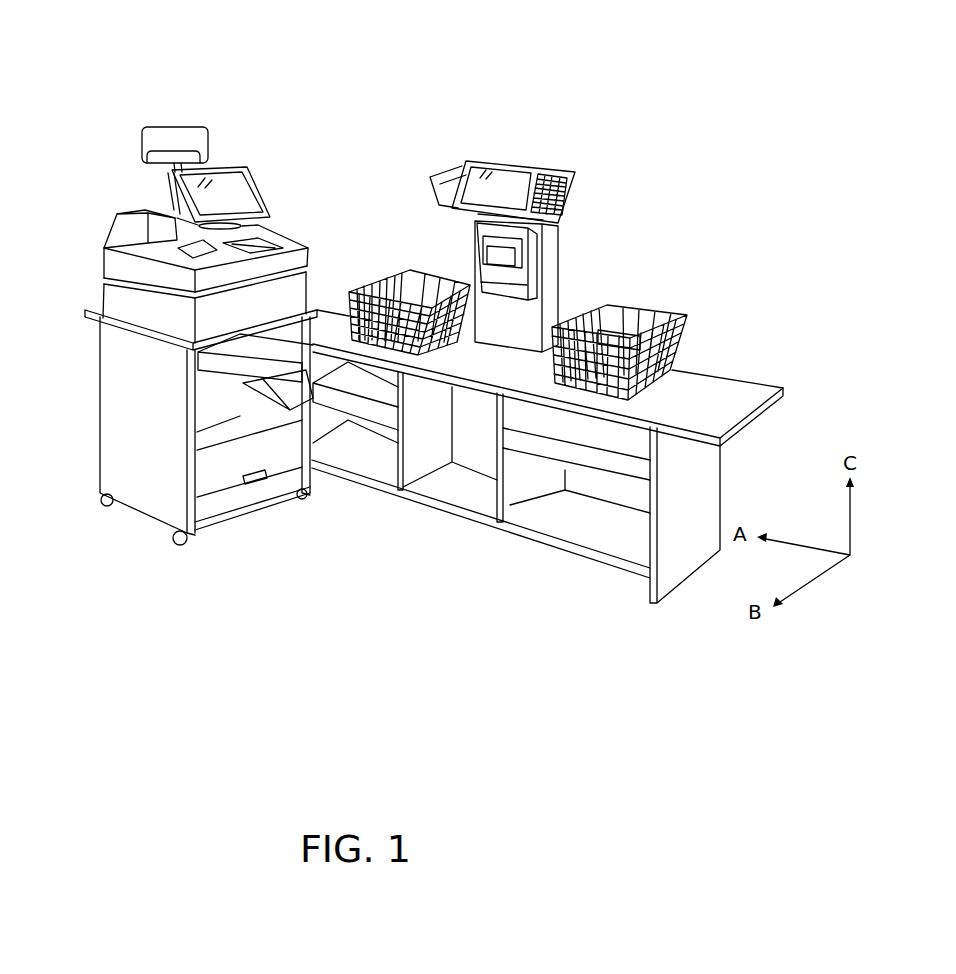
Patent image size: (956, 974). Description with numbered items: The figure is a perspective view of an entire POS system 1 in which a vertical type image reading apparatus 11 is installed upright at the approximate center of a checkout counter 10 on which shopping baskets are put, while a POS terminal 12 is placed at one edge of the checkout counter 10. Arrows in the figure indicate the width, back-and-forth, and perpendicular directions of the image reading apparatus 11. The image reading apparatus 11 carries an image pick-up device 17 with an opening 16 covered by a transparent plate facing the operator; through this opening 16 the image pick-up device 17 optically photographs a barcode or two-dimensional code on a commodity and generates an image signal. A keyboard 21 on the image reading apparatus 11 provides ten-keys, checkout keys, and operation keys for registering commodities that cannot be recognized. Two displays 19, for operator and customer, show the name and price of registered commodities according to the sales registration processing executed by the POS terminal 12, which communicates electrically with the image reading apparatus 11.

The POS system 1 is at (73, 76).
The checkout counter 10 is at (748, 397).
The image reading apparatus 11 is at (551, 250).
The POS terminal 12 is at (118, 258).
The opening 16 is at (477, 243).
The image pick-up device 17 is at (517, 266).
The displays 19 is at (442, 189).
The keyboard 21 is at (547, 176).